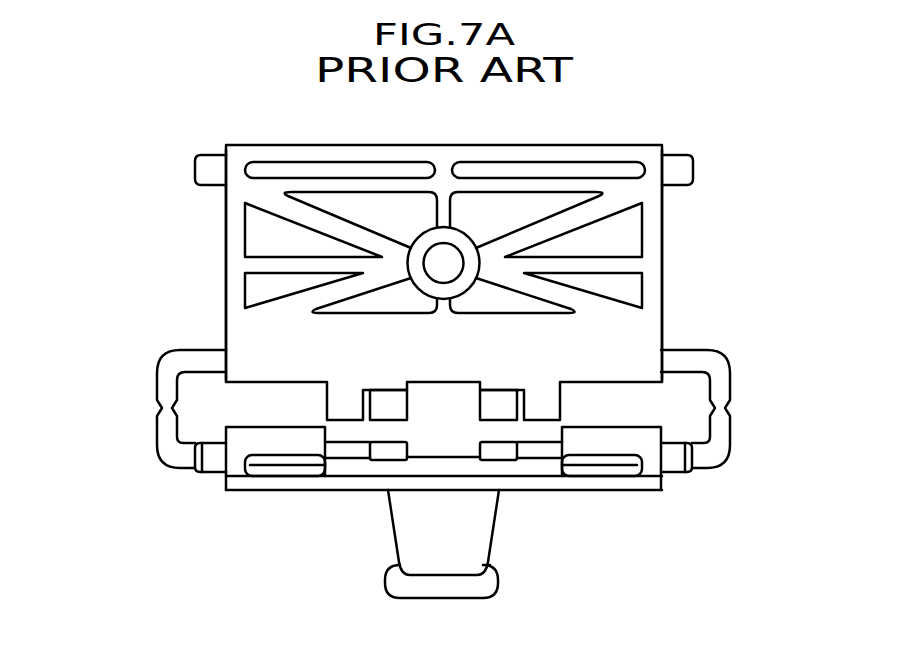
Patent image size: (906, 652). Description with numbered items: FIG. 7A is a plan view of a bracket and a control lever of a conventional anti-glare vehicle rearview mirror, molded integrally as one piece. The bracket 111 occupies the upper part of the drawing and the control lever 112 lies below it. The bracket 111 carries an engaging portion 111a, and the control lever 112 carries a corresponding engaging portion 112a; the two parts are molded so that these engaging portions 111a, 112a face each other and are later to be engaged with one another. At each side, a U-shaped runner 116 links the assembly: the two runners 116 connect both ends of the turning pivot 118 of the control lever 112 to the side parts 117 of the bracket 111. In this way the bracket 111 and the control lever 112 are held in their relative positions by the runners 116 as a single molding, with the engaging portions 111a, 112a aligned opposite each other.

The bracket 111 is at (213, 140).
The engaging portion 111a is at (345, 403).
The control lever 112 is at (220, 547).
The engaging portion 112a is at (345, 448).
The U-shaped runner 116 is at (172, 373).
The side part 117 is at (224, 282).
The turning pivot 118 is at (212, 460).